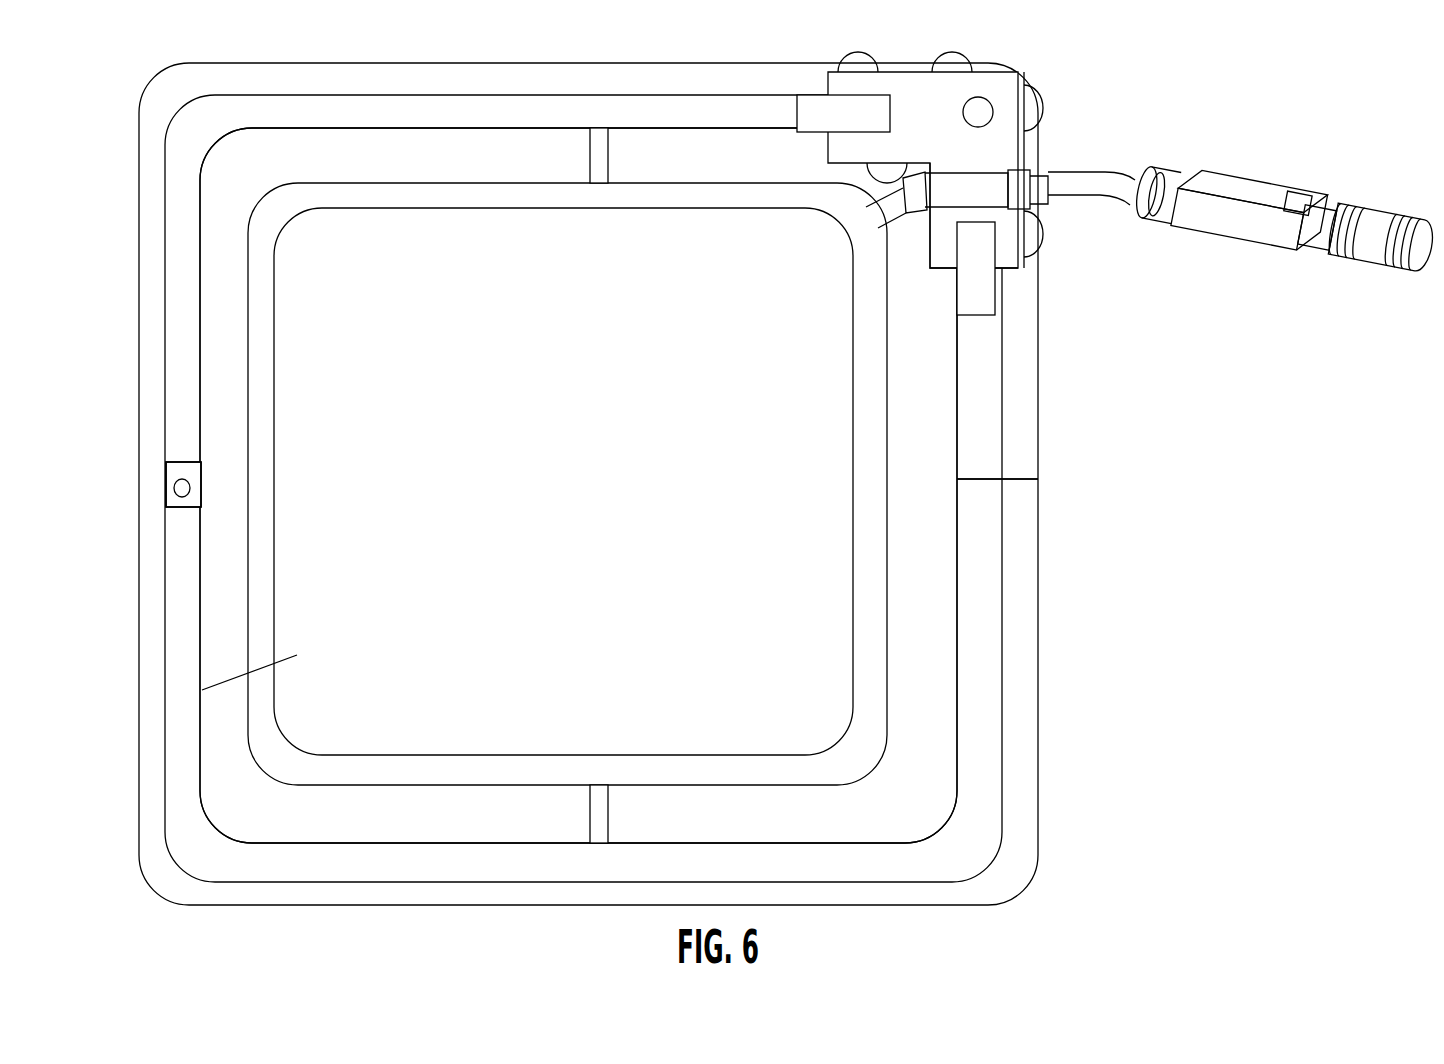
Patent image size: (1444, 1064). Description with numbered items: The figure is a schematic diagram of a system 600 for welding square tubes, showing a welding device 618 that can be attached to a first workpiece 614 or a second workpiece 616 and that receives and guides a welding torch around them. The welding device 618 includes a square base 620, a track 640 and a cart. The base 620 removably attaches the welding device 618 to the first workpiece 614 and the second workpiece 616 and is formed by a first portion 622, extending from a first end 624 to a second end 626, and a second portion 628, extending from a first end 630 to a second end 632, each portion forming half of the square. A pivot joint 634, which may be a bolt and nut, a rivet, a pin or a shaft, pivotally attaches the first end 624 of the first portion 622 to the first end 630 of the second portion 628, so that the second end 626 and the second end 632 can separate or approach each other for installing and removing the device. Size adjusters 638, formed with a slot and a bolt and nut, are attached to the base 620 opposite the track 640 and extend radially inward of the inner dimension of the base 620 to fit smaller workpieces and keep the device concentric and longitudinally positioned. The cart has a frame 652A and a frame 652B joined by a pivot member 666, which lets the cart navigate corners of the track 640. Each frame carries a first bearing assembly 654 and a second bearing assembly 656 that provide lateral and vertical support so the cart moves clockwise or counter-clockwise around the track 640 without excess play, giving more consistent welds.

The system 600 is at (732, 478).
The first workpiece 614 is at (887, 483).
The second workpiece 616 is at (1110, 348).
The welding device 618 is at (598, 484).
The base 620 is at (1025, 723).
The first portion 622 is at (175, 348).
The first end 624 is at (166, 462).
The second end 626 is at (1001, 463).
The second portion 628 is at (180, 712).
The first end 630 is at (166, 507).
The second end 632 is at (1001, 485).
The pivot joint 634 is at (182, 488).
The size adjusters 638 is at (590, 157).
The track 640 is at (973, 808).
The frame 652A is at (1018, 266).
The frame 652B is at (1003, 98).
The first bearing assembly 654 is at (925, 182).
The second bearing assembly 656 is at (797, 132).
The pivot member 666 is at (985, 112).